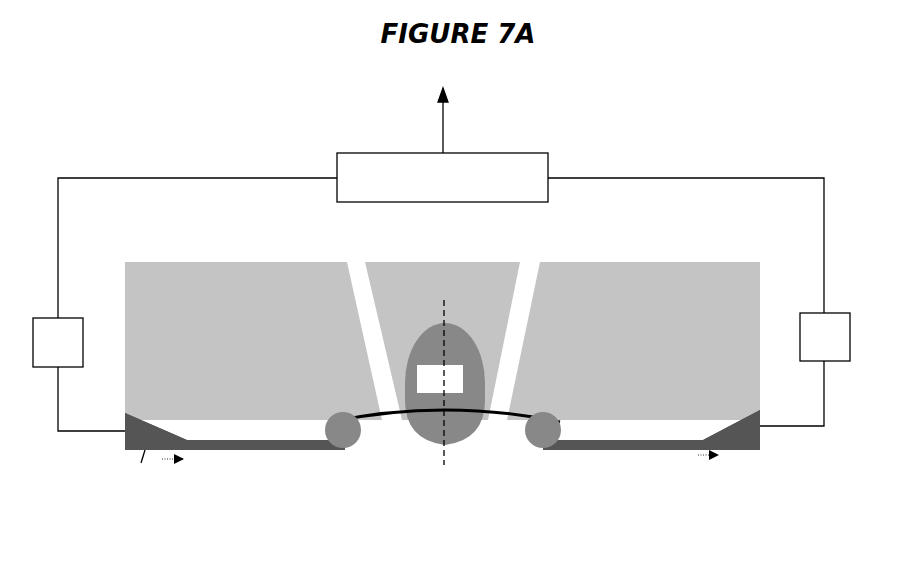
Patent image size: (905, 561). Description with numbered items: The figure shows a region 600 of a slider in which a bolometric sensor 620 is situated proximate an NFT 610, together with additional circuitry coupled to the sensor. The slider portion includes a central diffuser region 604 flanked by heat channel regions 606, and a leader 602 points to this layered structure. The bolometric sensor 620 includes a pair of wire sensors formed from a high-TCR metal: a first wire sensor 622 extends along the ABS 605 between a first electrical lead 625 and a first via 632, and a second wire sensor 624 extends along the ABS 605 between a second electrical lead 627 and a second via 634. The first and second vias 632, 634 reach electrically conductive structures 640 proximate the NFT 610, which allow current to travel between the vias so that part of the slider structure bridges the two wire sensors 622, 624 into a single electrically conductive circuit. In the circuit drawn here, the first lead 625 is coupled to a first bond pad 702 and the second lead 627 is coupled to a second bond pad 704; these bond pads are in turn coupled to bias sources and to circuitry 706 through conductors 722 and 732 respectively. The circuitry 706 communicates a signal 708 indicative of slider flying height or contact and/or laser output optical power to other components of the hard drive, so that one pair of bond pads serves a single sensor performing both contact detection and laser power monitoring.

The slider region 600 is at (718, 150).
The device 602 is at (570, 262).
The diffuser region 604 is at (442, 341).
The ABS 605 is at (546, 469).
The heat channel regions 606 is at (442, 341).
The NFT 610 is at (445, 384).
The bolometric sensor 620 is at (322, 488).
The first wire sensor 622 is at (217, 450).
The second wire sensor 624 is at (636, 450).
The first electrical lead 625 is at (151, 413).
The second electrical lead 627 is at (735, 418).
The first via 632 is at (333, 416).
The second via 634 is at (548, 410).
The electrically conductive structures 640 is at (500, 407).
The first bond pad 702 is at (58, 342).
The second bond pad 704 is at (825, 337).
The circuitry 706 is at (513, 153).
The signal 708 is at (441, 123).
The first conductor 722 is at (150, 179).
The second conductor 732 is at (824, 212).